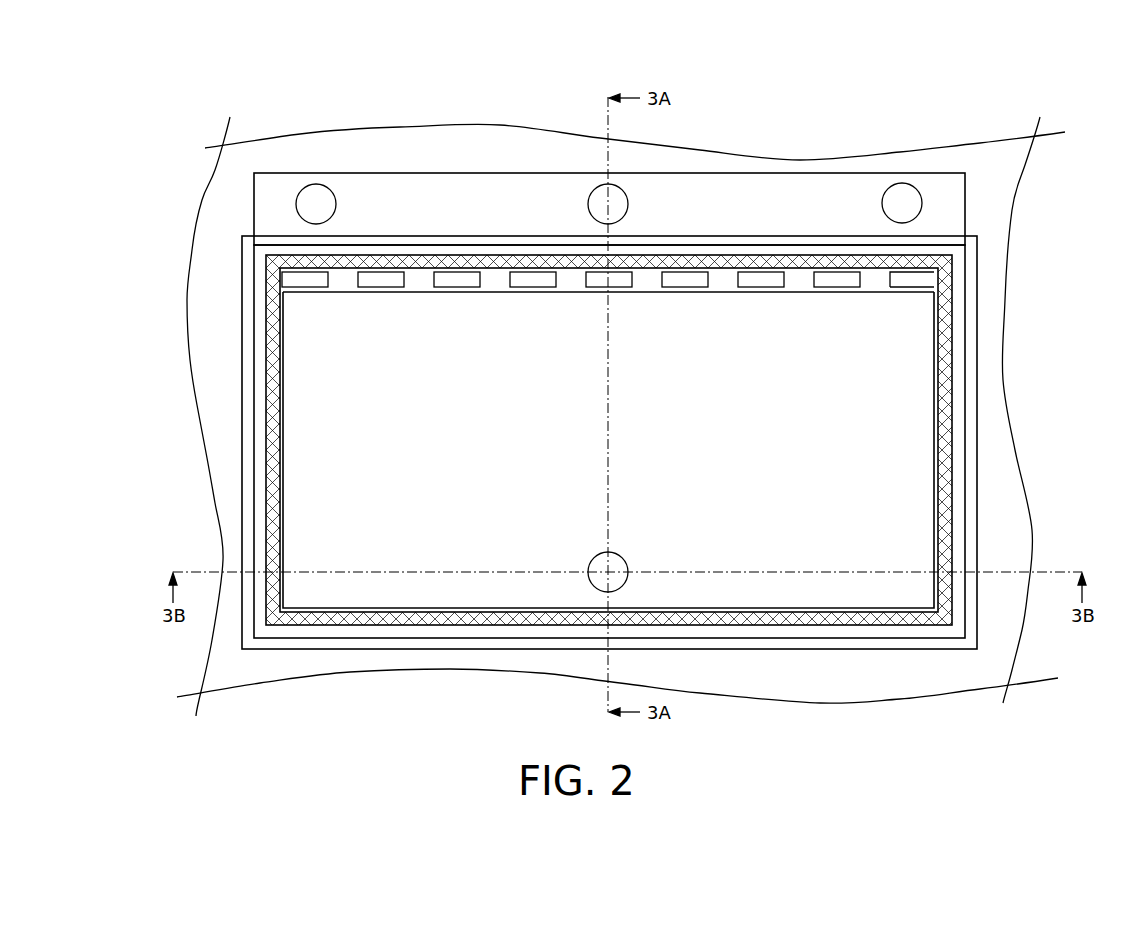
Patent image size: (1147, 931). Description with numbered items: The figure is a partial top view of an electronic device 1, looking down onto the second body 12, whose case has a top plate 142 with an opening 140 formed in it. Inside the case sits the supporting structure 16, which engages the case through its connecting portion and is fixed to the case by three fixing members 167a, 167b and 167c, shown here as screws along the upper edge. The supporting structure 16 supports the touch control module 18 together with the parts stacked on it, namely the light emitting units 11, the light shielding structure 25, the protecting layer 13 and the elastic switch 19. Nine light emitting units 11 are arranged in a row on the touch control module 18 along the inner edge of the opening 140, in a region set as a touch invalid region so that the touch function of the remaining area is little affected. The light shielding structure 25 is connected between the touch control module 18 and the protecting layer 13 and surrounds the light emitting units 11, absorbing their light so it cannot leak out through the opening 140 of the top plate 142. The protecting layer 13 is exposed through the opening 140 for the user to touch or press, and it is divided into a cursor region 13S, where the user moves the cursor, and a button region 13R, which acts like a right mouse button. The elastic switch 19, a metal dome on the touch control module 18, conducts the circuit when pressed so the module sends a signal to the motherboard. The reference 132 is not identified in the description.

The electronic device 1 is at (124, 94).
The second body 12 is at (170, 145).
The supporting structure 16 is at (554, 163).
The fixing member 167a is at (331, 190).
The fixing member 167b is at (594, 190).
The fixing member 167c is at (888, 189).
The light emitting unit 11 is at (303, 278).
The protecting layer 13 is at (242, 320).
The touch control module 18 is at (253, 355).
The light shielding structure 25 is at (266, 410).
The top plate 142 is at (227, 455).
The opening 140 is at (232, 492).
The cursor region 13S is at (912, 418).
The button region 13R is at (881, 592).
The inner corner 132 is at (336, 592).
The elastic switch 19 is at (594, 586).